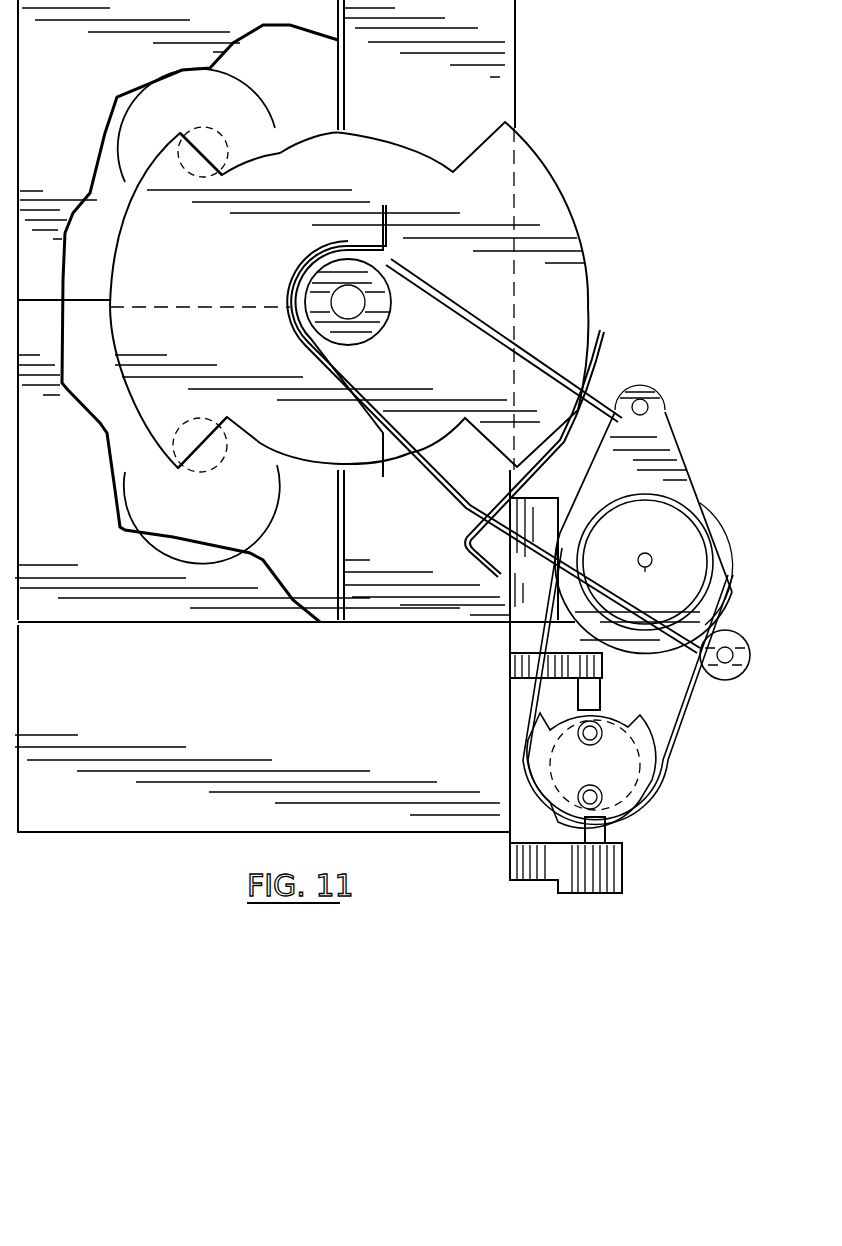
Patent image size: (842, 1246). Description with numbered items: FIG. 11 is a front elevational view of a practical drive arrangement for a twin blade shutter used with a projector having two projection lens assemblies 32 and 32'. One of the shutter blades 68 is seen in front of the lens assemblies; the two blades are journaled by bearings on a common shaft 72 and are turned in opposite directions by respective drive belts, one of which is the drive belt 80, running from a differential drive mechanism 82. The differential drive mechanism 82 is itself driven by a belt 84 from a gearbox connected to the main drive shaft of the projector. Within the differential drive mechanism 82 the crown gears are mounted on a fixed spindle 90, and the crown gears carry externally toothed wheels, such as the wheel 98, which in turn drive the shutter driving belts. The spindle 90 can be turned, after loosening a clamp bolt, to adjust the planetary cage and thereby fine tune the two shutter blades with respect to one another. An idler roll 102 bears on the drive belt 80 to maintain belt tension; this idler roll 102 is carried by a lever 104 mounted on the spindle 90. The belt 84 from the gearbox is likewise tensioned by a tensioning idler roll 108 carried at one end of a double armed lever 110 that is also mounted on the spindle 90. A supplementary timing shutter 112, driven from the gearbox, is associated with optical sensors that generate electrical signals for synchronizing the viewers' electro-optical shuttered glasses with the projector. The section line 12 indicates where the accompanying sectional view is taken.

The section line 12- 12 is at (160, 130).
The projection lens assembly 32 is at (222, 121).
The projection lens assembly 32' is at (229, 490).
The shutter blade 68 is at (528, 202).
The common shaft 72 is at (355, 295).
The drive belt 80 is at (705, 492).
The differential drive mechanism 82 is at (731, 507).
The belt 84 is at (527, 698).
The fixed spindle 90 is at (650, 554).
The externally toothed wheel 98 is at (730, 535).
The idler roll 102 is at (658, 396).
The lever 104 is at (660, 434).
The tensioning idler roll 108 is at (735, 636).
The double armed lever 110 is at (718, 594).
The supplementary timing shutter 112 is at (625, 758).